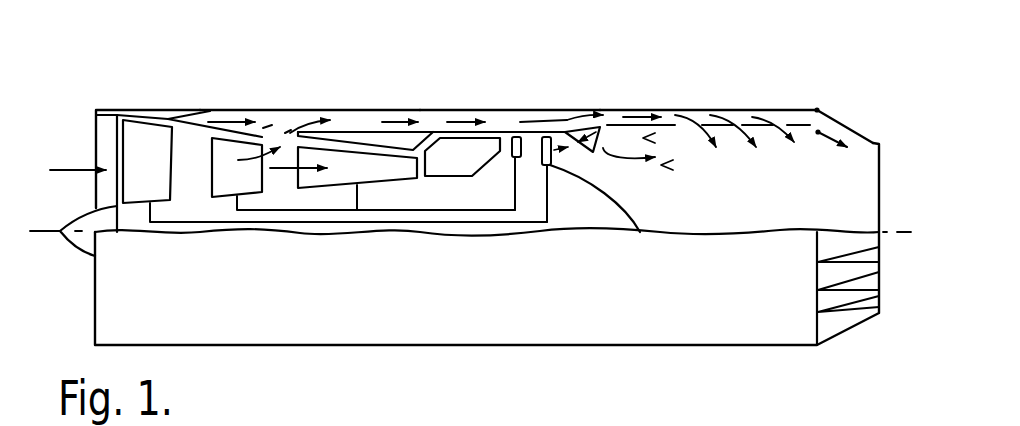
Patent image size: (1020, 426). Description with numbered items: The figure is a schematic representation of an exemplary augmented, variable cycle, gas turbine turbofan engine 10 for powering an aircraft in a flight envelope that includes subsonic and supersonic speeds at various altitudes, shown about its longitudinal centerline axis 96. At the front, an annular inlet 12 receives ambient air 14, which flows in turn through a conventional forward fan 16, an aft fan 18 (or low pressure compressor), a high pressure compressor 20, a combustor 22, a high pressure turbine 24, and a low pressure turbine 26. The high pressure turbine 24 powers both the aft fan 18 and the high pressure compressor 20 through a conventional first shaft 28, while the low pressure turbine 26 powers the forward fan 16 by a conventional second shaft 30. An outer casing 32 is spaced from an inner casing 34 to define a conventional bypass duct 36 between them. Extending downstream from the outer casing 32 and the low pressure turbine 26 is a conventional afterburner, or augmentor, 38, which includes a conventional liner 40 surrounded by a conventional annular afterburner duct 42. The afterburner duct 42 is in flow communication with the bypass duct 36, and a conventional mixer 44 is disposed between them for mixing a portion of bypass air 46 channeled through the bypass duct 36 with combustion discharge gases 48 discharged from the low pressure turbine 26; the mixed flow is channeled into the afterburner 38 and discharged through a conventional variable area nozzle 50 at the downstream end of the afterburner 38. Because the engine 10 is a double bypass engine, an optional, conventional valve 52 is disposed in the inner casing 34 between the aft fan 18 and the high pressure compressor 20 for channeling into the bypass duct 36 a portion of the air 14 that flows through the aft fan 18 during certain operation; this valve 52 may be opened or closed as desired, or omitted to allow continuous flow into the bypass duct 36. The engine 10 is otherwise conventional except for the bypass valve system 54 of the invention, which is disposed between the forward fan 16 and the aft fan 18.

The variable cycle gas turbine turbofan engine 10 is at (565, 85).
The annular inlet 12 is at (97, 115).
The ambient air 14 is at (72, 163).
The forward fan 16 is at (158, 173).
The aft fan 18 is at (248, 186).
The high pressure compressor 20 is at (364, 176).
The combustor 22 is at (471, 163).
The high pressure turbine 24 is at (512, 158).
The low pressure turbine 26 is at (544, 164).
The first shaft 28 is at (377, 210).
The second shaft 30 is at (391, 232).
The outer casing 32 is at (338, 110).
The inner casing 34 is at (373, 111).
The bypass duct 36 is at (357, 125).
The afterburner 38 is at (738, 107).
The liner 40 is at (798, 130).
The afterburner duct 42 is at (613, 113).
The mixer 44 is at (595, 150).
The bypass air 46 is at (460, 126).
The combustion discharge gases 48 is at (557, 168).
The variable area nozzle 50 is at (857, 132).
The valve 52 is at (281, 114).
The bypass valve system 54 is at (195, 105).
The longitudinal centerline axis 96 is at (38, 233).